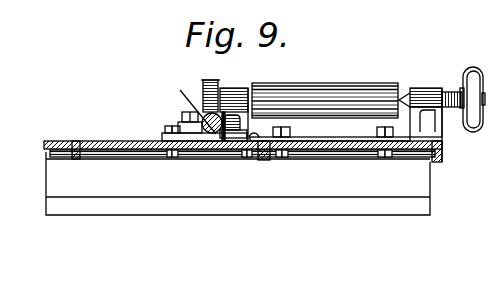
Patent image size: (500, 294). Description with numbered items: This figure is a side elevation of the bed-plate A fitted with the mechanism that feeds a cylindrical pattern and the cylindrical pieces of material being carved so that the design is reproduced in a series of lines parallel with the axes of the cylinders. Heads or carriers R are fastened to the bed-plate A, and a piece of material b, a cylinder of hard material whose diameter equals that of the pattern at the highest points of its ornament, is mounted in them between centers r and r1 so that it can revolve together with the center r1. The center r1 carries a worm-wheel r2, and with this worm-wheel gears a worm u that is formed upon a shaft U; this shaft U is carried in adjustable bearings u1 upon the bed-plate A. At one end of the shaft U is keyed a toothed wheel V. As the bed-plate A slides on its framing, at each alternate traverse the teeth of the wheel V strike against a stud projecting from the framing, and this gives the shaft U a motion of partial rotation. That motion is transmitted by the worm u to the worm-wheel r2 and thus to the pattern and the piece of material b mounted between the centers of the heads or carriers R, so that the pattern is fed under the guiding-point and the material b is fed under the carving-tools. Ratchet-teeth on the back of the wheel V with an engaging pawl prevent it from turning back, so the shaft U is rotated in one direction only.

The bed-plate A is at (101, 161).
The heads or carriers R is at (329, 133).
The piece of material b is at (331, 100).
The center r is at (410, 89).
The center r1 is at (244, 113).
The worm-wheel r2 is at (215, 85).
The shaft U is at (203, 105).
The worm u is at (203, 142).
The adjustable bearing u1 is at (215, 127).
The toothed wheel V is at (182, 124).